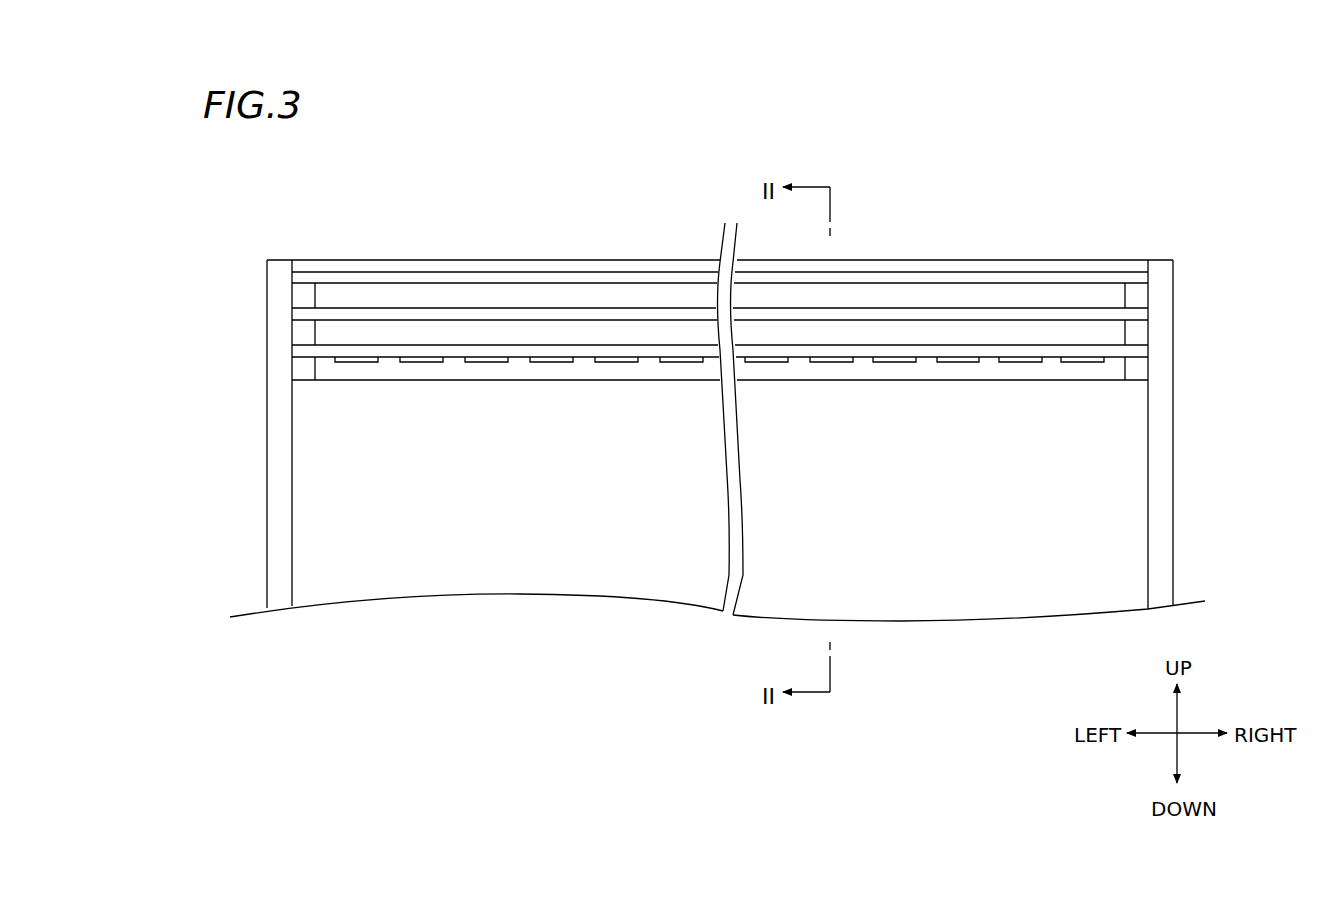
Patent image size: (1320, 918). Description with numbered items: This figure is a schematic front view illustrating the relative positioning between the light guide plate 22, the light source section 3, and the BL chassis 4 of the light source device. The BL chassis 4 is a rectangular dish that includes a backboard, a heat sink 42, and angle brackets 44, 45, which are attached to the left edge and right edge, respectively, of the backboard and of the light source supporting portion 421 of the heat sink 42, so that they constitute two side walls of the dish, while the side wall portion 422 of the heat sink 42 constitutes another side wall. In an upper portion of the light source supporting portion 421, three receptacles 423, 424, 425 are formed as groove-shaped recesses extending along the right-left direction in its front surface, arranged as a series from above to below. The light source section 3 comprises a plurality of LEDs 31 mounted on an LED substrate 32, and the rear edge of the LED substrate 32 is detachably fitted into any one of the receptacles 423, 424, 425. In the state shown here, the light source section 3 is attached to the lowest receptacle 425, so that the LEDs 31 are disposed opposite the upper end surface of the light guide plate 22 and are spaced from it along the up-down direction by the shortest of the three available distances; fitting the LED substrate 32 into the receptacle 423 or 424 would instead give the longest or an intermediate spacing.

The light source section 3 is at (726, 250).
The LED 31 is at (895, 357).
The LED substrate 32 is at (1113, 345).
The BL chassis 4 is at (721, 357).
The heat sink 42 is at (720, 198).
The light source supporting portion 421 is at (915, 290).
The side wall portion 422 is at (870, 262).
The receptacle 423 is at (460, 274).
The receptacle 424 is at (520, 315).
The receptacle 425 is at (582, 347).
The angle bracket 44 is at (278, 523).
The angle bracket 45 is at (1160, 430).
The light guide plate 22 is at (1125, 530).